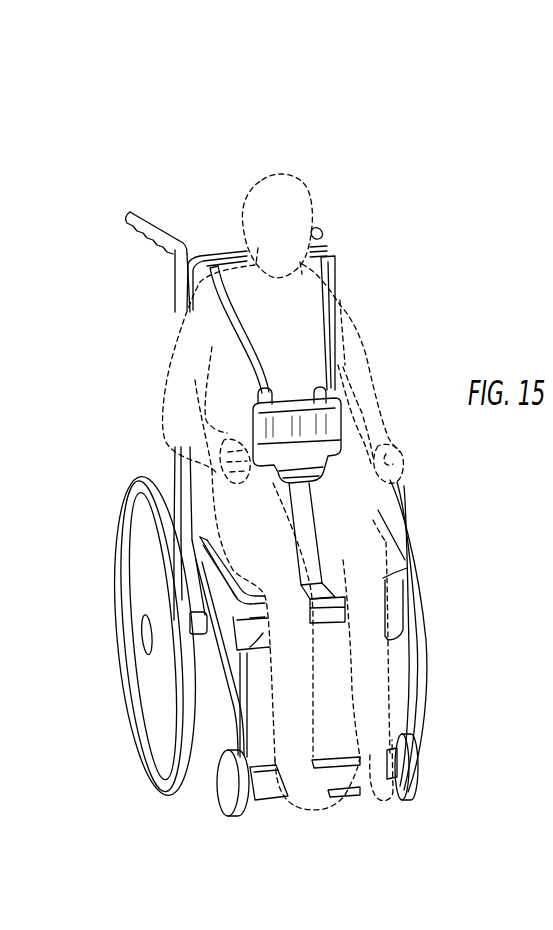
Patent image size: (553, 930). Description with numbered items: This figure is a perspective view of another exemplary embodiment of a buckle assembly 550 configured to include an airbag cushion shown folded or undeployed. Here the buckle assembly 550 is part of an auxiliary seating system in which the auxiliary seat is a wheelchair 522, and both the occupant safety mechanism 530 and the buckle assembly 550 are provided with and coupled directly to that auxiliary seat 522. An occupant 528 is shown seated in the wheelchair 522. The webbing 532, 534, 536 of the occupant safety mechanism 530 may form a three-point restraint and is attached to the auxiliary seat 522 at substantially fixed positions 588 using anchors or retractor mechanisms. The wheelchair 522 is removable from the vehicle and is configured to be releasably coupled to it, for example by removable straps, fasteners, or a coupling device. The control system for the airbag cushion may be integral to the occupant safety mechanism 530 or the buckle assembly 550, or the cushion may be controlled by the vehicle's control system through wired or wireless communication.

The wheelchair 522 is at (140, 528).
The occupant 528 is at (363, 333).
The occupant safety mechanism 530 is at (153, 380).
The webbing 532 is at (245, 278).
The webbing 534 is at (332, 275).
The webbing 536 is at (308, 535).
The buckle assembly 550 is at (322, 445).
The substantially fixed positions 588 is at (220, 268).